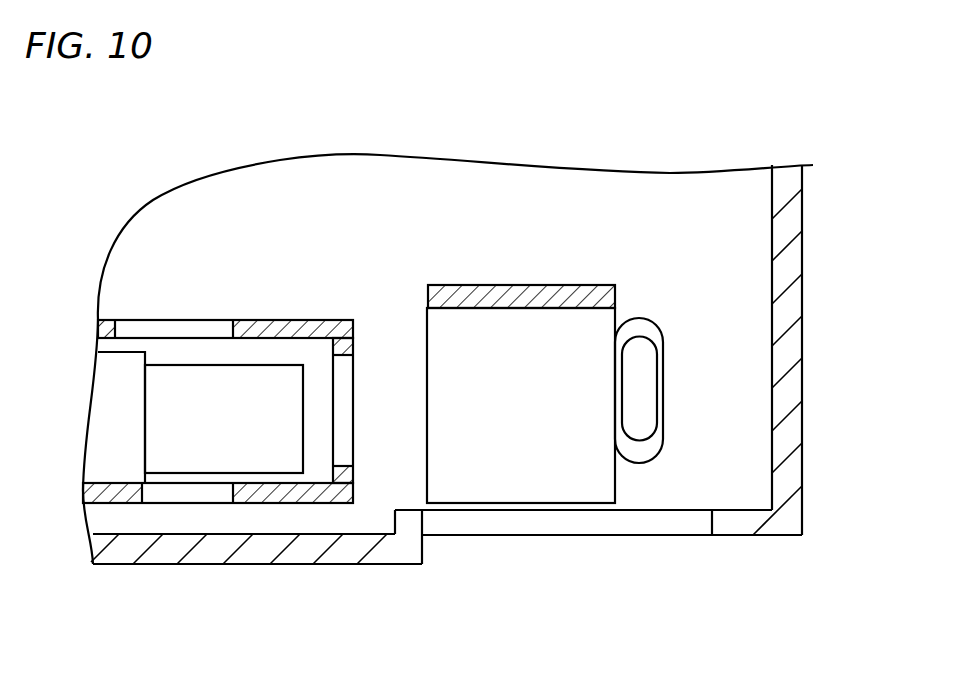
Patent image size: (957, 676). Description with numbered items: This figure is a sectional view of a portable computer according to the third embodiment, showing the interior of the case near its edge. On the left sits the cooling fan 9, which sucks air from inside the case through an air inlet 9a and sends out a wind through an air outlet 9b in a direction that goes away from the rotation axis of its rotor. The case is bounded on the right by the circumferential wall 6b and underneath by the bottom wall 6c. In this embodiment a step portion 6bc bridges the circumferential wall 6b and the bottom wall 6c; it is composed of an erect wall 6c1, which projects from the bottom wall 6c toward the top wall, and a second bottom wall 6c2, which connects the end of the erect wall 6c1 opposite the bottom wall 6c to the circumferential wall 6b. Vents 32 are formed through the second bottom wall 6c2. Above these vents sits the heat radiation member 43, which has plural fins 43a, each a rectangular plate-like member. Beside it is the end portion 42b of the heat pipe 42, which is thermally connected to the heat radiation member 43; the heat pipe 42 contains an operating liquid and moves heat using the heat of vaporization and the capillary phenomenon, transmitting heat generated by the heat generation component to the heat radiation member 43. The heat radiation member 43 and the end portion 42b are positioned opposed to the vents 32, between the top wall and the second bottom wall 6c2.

The cooling fan 9 is at (218, 370).
The air inlet 9a is at (236, 334).
The air outlet 9b is at (347, 355).
The heat radiation member 43 is at (494, 355).
The fin 43a is at (428, 341).
The heat pipe 42 is at (662, 327).
The other end portion of heat pipe 42b is at (644, 318).
The circumferential wall 6b is at (796, 183).
The vent 32 is at (712, 516).
The bottom wall 6c is at (145, 537).
The erect wall 6c1 is at (418, 545).
The second bottom wall 6c2 is at (584, 520).
The step portion 6bc is at (558, 550).